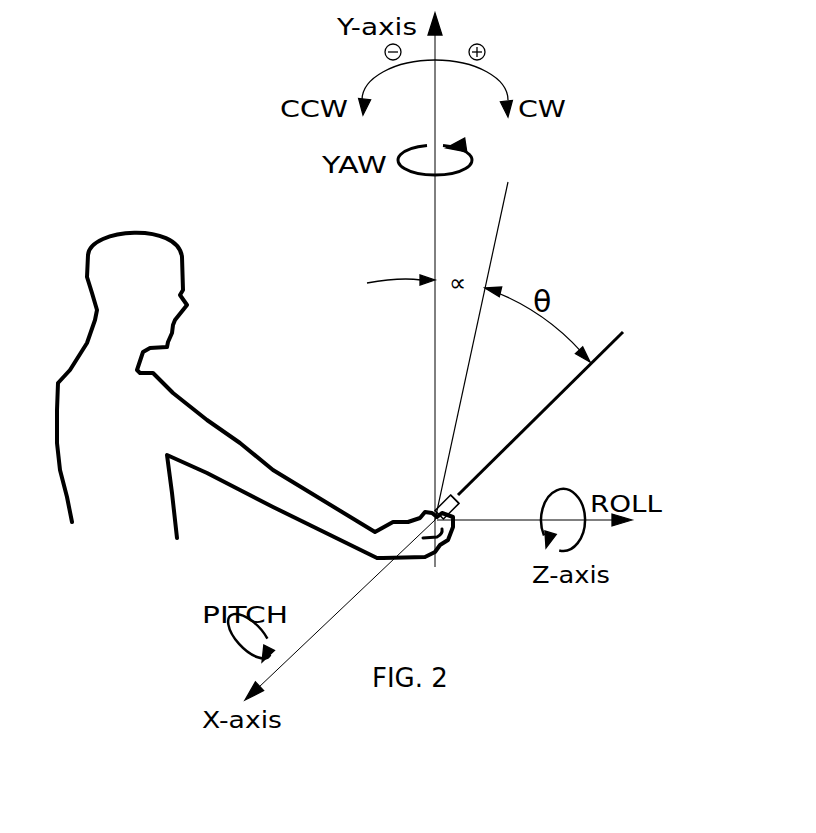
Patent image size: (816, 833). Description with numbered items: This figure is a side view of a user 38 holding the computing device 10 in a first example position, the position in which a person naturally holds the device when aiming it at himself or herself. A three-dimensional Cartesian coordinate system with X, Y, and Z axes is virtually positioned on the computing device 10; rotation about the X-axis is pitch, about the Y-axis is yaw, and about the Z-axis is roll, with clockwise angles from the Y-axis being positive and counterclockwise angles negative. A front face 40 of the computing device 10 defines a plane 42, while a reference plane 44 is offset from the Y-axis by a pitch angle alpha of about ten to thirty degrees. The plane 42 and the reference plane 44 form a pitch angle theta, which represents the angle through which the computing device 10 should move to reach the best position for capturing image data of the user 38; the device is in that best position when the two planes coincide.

The computing device 10 is at (457, 510).
The user 38 is at (192, 302).
The front face 40 is at (447, 500).
The plane 42 is at (557, 400).
The reference plane 44 is at (500, 230).